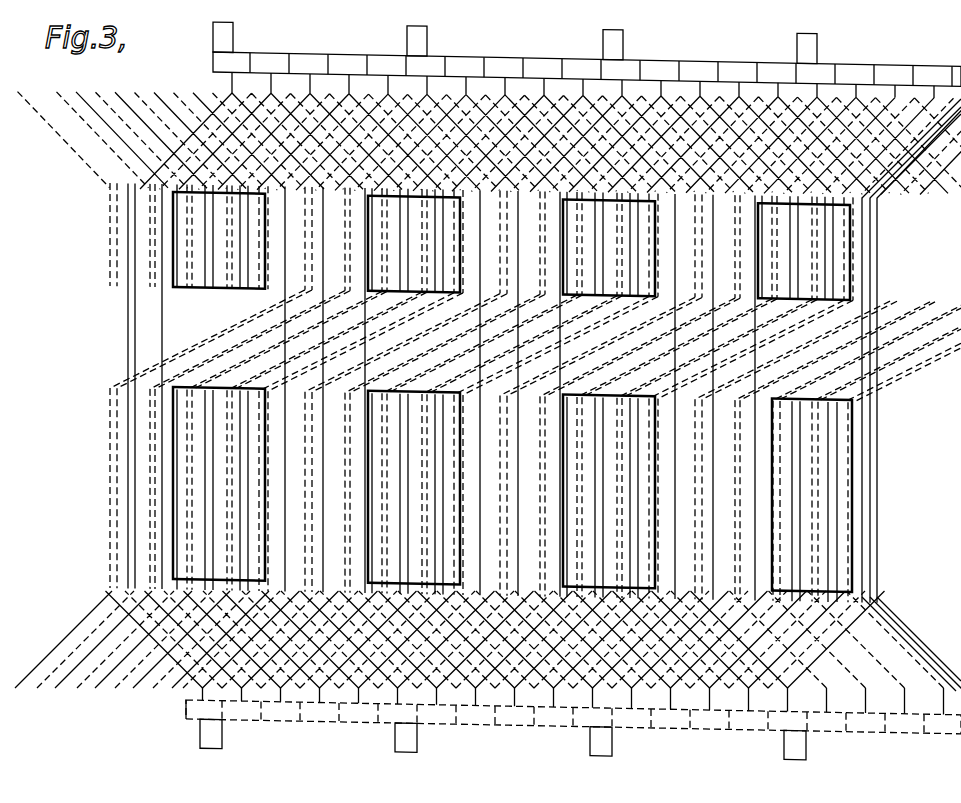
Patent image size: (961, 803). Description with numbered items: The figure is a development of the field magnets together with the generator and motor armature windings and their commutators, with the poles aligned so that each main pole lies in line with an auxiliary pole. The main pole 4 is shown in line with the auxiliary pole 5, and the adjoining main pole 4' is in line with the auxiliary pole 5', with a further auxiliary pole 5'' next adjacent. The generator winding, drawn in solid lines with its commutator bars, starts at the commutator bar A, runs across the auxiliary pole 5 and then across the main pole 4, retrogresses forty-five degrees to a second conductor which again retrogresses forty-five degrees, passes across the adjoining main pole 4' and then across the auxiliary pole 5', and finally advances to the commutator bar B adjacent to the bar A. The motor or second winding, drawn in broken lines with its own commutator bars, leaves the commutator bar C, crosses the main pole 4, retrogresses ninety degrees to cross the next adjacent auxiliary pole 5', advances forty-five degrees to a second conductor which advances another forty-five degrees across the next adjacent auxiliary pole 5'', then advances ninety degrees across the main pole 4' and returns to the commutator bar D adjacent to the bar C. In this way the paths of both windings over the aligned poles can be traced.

The commutator bar A is at (302, 63).
The commutator bar B is at (346, 62).
The commutator bar C is at (325, 710).
The commutator bar D is at (370, 714).
The auxiliary pole 5 is at (220, 236).
The auxiliary pole 5' is at (415, 240).
The auxiliary pole 5'' is at (610, 244).
The main pole 4 is at (220, 489).
The main pole 4' is at (415, 493).